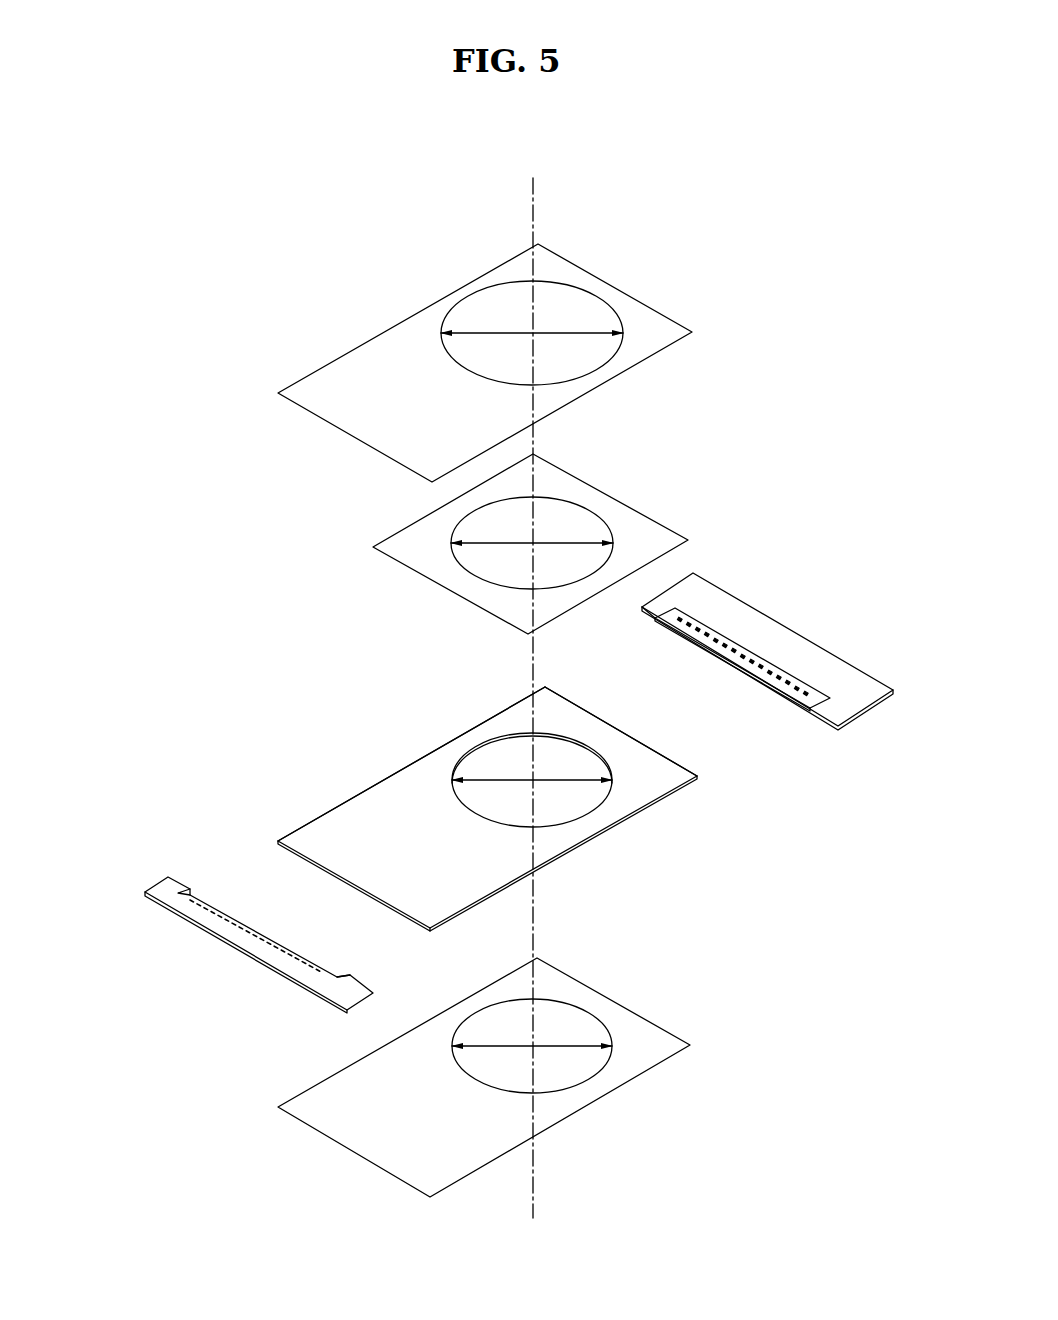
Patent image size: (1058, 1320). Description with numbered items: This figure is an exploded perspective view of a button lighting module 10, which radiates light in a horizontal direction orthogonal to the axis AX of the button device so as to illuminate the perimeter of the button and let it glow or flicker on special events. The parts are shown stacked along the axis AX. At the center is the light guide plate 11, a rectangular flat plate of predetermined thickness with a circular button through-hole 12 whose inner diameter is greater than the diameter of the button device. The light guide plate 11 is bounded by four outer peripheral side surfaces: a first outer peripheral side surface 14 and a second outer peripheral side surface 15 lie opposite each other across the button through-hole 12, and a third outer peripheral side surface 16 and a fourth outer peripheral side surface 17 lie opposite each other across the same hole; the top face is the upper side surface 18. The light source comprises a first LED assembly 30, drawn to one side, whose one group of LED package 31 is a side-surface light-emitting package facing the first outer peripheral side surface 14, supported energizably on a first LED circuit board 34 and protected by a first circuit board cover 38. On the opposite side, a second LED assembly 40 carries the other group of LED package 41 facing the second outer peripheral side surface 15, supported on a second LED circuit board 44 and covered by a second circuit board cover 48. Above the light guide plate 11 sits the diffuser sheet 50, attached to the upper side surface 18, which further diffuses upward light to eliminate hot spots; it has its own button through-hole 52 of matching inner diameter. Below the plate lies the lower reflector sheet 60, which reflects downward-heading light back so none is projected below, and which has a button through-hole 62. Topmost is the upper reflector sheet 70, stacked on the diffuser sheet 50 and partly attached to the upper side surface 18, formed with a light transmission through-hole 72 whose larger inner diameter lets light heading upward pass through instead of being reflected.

The button lighting module 10 is at (245, 298).
The light guide plate 11 is at (504, 817).
The button through-hole 12 is at (488, 800).
The first outer peripheral side surface 14 is at (650, 745).
The second outer peripheral side surface 15 is at (348, 883).
The third outer peripheral side surface 16 is at (557, 858).
The fourth outer peripheral side surface 17 is at (403, 767).
The upper side surface 18 is at (357, 827).
The first LED assembly 30 is at (769, 621).
The LED package 31 is at (718, 635).
The first LED circuit board 34 is at (690, 618).
The first circuit board cover 38 is at (842, 667).
The second LED assembly 40 is at (236, 972).
The LED package 41 is at (287, 957).
The second LED circuit board 44 is at (153, 903).
The second circuit board cover 48 is at (327, 985).
The diffuser sheet 50 is at (502, 531).
The button through-hole 52 is at (557, 523).
The lower reflector sheet 60 is at (484, 1083).
The button through-hole 62 is at (552, 1028).
The upper reflector sheet 70 is at (453, 349).
The light transmission through-hole 72 is at (563, 314).
The axis AX is at (533, 1180).